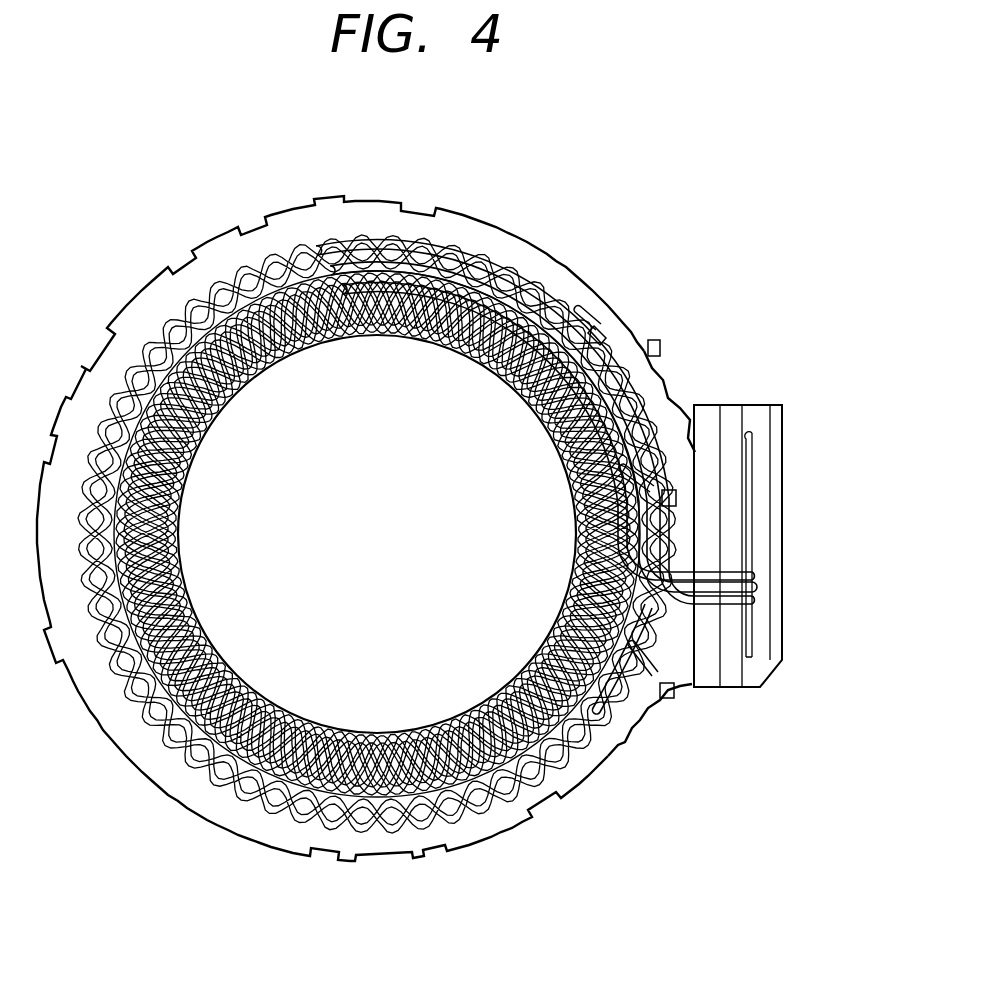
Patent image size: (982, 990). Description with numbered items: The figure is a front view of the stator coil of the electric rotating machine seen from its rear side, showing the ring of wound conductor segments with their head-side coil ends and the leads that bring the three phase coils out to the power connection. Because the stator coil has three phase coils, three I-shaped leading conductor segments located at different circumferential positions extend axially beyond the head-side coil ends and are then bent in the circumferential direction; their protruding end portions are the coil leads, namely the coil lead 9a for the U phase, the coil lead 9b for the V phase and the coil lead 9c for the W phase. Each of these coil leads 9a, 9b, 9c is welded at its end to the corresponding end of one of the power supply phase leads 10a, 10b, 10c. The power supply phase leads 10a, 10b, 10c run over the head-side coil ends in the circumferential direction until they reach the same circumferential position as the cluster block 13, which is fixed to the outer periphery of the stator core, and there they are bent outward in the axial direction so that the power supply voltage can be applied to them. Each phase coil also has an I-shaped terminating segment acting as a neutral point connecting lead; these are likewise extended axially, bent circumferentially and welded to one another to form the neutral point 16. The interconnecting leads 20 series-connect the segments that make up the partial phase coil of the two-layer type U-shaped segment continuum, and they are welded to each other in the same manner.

The coil lead for the U phase 9a is at (598, 716).
The coil lead for the V phase 9b is at (637, 473).
The coil lead for the W phase 9c is at (577, 292).
The power supply phase lead 10a is at (645, 662).
The power supply phase lead 10b is at (637, 484).
The power supply phase lead 10c is at (592, 322).
The cluster block 13 is at (760, 418).
The neutral point 16 is at (500, 262).
The interconnecting leads 20 is at (660, 348).